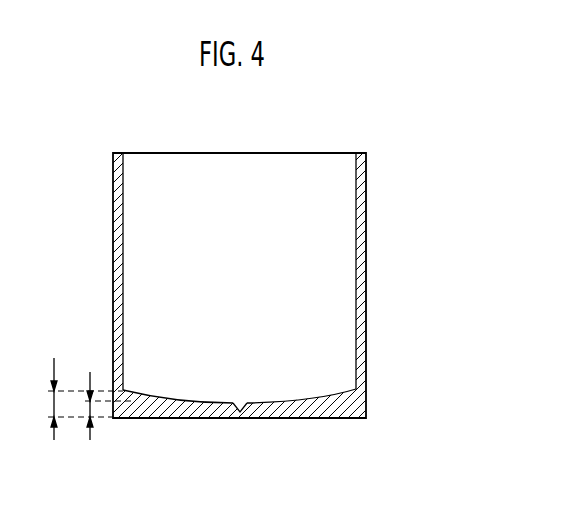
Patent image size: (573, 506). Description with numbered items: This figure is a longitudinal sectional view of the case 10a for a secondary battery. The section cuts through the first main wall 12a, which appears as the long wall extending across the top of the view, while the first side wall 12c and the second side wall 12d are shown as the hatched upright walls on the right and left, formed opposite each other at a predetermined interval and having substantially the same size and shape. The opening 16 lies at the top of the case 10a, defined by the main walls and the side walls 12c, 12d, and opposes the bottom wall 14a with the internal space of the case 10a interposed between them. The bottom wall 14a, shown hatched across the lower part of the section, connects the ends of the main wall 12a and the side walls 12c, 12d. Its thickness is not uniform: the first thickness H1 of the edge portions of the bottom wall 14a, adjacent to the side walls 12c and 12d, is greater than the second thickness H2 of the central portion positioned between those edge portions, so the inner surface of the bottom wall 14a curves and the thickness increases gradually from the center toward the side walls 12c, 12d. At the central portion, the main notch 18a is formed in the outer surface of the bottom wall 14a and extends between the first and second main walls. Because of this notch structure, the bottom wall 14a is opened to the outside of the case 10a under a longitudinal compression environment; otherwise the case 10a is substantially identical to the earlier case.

The case 10a is at (109, 132).
The first main wall 12a is at (199, 168).
The first side wall 12c is at (361, 275).
The second side wall 12d is at (118, 280).
The bottom wall 14a is at (301, 419).
The opening 16 is at (263, 153).
The main notch 18a is at (223, 419).
The first thickness H1 is at (78, 399).
The second thickness H2 is at (100, 406).